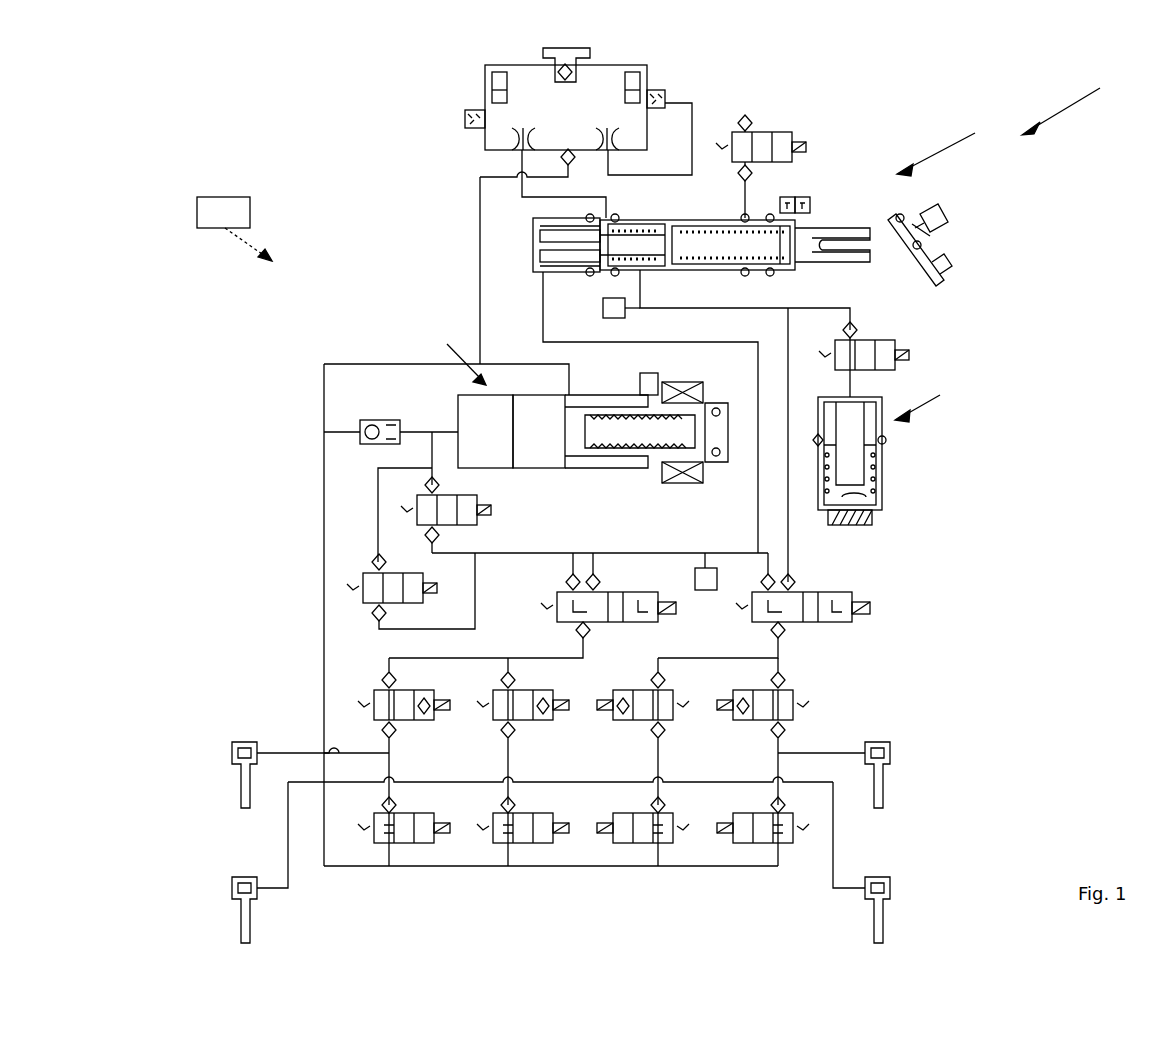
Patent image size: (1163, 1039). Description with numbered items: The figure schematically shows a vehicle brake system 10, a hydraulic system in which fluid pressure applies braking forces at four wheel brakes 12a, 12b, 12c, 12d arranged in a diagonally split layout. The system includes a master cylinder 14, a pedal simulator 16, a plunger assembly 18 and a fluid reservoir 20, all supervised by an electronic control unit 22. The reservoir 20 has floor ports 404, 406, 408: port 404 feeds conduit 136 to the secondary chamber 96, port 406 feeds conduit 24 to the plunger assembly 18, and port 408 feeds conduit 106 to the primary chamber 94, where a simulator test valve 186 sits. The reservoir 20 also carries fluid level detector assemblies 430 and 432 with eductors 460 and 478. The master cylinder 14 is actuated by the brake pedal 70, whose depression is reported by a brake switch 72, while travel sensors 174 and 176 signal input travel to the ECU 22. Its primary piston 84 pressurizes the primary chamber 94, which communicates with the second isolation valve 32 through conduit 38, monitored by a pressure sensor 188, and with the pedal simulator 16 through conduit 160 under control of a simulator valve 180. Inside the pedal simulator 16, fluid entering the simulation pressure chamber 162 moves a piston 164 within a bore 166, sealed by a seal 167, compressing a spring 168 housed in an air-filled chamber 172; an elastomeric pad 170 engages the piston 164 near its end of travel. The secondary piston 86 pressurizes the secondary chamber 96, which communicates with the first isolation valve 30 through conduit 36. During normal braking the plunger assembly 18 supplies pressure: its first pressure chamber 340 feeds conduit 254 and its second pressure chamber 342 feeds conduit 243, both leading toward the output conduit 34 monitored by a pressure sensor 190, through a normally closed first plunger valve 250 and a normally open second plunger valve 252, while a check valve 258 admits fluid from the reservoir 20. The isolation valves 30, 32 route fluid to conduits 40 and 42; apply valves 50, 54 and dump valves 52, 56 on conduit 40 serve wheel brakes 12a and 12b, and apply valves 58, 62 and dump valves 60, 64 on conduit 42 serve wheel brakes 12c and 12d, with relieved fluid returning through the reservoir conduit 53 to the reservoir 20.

The brake system 10 is at (1081, 99).
The wheel brake 12a is at (233, 750).
The wheel brake 12b is at (233, 885).
The wheel brake 12c is at (890, 885).
The wheel brake 12d is at (890, 750).
The master cylinder 14 is at (754, 212).
The pedal simulator 16 is at (882, 472).
The plunger assembly 18 is at (500, 592).
The fluid reservoir 20 is at (591, 88).
The electronic control unit 22 is at (250, 205).
The conduit 24 is at (478, 305).
The first isolation valve 30 is at (652, 620).
The second isolation valve 32 is at (848, 622).
The output conduit 34 is at (640, 555).
The conduit 36 is at (648, 342).
The conduit 38 is at (786, 343).
The conduit 40 is at (580, 648).
The conduit 42 is at (780, 650).
The first apply valve 50 is at (375, 690).
The first dump valve 52 is at (400, 845).
The reservoir conduit 53 is at (455, 867).
The second apply valve 54 is at (495, 690).
The second dump valve 56 is at (520, 845).
The third apply valve 58 is at (647, 690).
The third dump valve 60 is at (665, 845).
The fourth apply valve 62 is at (795, 690).
The fourth dump valve 64 is at (783, 845).
The brake pedal 70 is at (942, 268).
The brake sensor or switch 72 is at (948, 222).
The primary piston 84 is at (812, 268).
The secondary piston 86 is at (660, 255).
The primary chamber 94 is at (705, 240).
The secondary chamber 96 is at (542, 266).
The conduit 106 is at (748, 192).
The conduit 136 is at (608, 205).
The conduit 160 is at (852, 313).
The simulation pressure chamber 162 is at (866, 397).
The piston 164 is at (865, 430).
The bore 166 is at (868, 505).
The seal 167 is at (885, 443).
The spring 168 is at (876, 482).
The elastomeric pad 170 is at (855, 524).
The air-filled chamber 172 is at (845, 500).
The travel sensor 174 is at (790, 197).
The travel sensor 176 is at (812, 206).
The simulator valve 180 is at (896, 346).
The simulator test valve 186 is at (792, 135).
The pressure sensor 188 is at (603, 310).
The pressure sensor 190 is at (712, 560).
The conduit 243 is at (540, 510).
The first plunger valve 250 is at (475, 524).
The second plunger valve 252 is at (356, 580).
The conduit 254 is at (442, 430).
The check valve 258 is at (360, 425).
The first pressure chamber 340 is at (488, 420).
The second pressure chamber 342 is at (545, 465).
The port 404 is at (518, 152).
The port 406 is at (569, 148).
The port 408 is at (615, 152).
The fluid level detector assembly 430 is at (671, 81).
The second fluid level detector assembly 432 is at (466, 95).
The eductor 460 is at (615, 143).
The eductor 478 is at (510, 140).